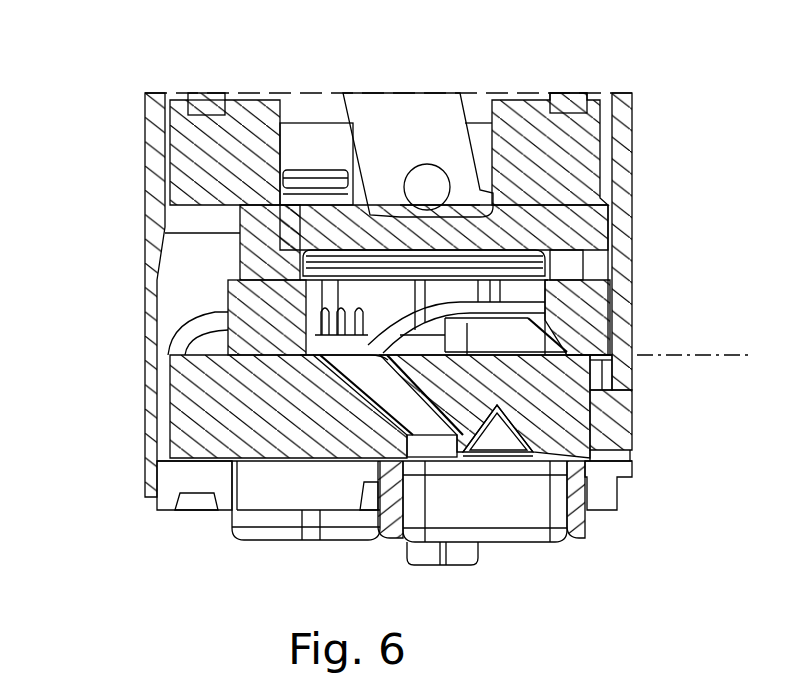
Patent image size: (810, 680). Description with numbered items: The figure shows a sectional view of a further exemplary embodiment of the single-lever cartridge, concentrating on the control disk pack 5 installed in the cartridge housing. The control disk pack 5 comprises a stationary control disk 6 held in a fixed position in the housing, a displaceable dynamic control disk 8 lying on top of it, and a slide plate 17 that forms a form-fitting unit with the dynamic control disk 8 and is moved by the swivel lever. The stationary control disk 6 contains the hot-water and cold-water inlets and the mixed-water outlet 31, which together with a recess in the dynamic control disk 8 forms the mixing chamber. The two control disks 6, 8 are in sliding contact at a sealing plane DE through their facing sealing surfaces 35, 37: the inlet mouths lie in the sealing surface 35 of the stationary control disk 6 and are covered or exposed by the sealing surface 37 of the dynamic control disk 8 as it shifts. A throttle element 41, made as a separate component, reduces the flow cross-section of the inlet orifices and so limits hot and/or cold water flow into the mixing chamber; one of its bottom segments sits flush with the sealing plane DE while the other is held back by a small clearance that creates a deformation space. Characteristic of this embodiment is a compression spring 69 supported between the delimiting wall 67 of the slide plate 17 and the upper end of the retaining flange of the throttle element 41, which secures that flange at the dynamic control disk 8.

The control disk pack 5 is at (50, 286).
The slide plate 17 is at (230, 250).
The dynamic control disk 8 is at (230, 316).
The stationary control disk 6 is at (178, 400).
The compression spring 69 is at (336, 278).
The delimiting wall 67 is at (507, 270).
The throttle element 41 is at (512, 293).
The sealing surface 35 is at (557, 360).
The sealing surface 37 is at (612, 372).
The mixed-water outlet 31 is at (472, 410).
The sealing plane DE is at (745, 358).